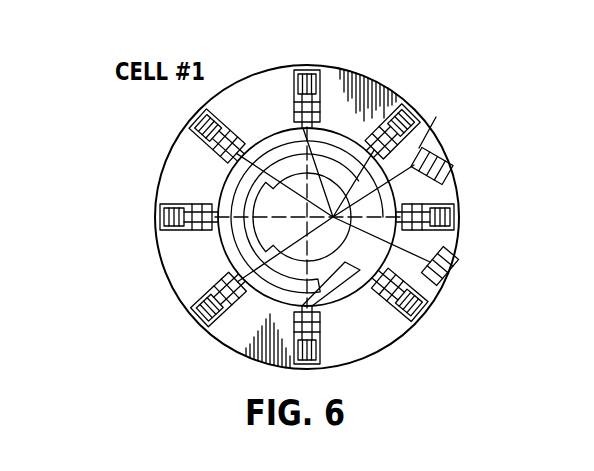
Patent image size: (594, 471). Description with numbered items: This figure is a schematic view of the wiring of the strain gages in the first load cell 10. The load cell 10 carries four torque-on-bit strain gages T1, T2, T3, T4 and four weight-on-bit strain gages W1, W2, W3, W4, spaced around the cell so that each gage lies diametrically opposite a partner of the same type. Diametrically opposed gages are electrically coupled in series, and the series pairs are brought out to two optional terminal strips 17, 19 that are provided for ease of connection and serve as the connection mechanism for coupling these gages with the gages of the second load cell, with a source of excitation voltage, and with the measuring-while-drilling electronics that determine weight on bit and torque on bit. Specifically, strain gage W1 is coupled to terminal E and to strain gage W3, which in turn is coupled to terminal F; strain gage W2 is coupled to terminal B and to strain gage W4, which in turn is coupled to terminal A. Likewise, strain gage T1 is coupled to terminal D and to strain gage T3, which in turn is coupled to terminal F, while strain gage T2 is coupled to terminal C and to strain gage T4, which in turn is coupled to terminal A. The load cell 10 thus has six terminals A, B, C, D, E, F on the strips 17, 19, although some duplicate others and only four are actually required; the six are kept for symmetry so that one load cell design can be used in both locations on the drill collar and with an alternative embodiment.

The first load cell 10 is at (438, 85).
The terminal strip 17 is at (451, 160).
The terminal strip 19 is at (456, 265).
The terminal A is at (440, 155).
The terminal B is at (450, 166).
The terminal C is at (449, 176).
The terminal D is at (452, 255).
The terminal E is at (450, 274).
The terminal F is at (446, 280).
The WOB strain gage W1 is at (320, 99).
The WOB strain gage W2 is at (189, 205).
The WOB strain gage W3 is at (323, 335).
The WOB strain gage W4 is at (457, 210).
The TOB strain gage T1 is at (219, 135).
The TOB strain gage T2 is at (219, 296).
The TOB strain gage T3 is at (397, 296).
The TOB strain gage T4 is at (405, 130).